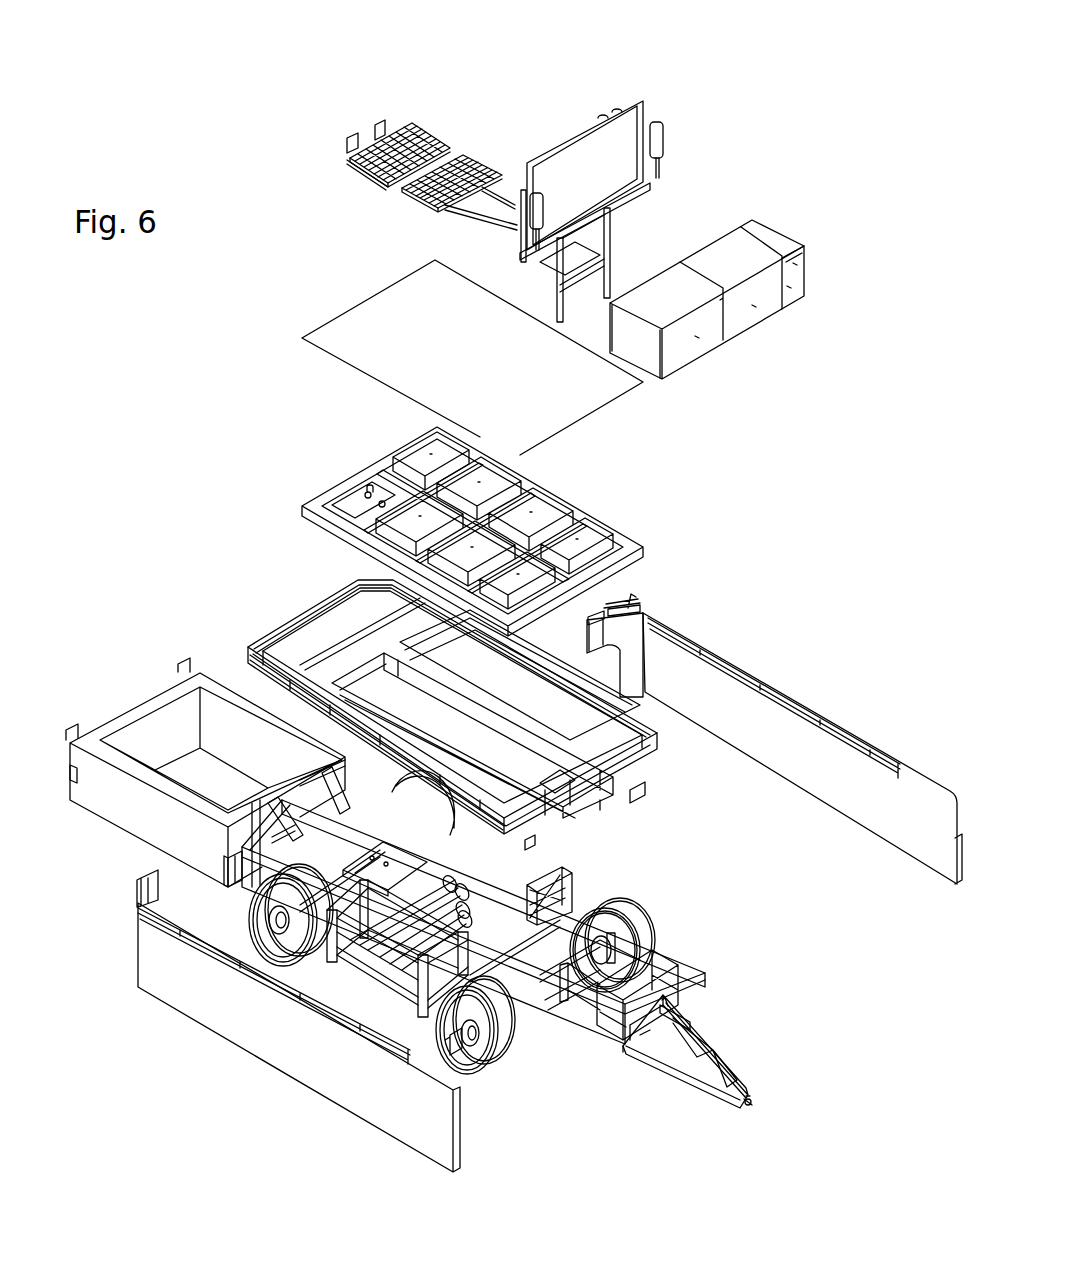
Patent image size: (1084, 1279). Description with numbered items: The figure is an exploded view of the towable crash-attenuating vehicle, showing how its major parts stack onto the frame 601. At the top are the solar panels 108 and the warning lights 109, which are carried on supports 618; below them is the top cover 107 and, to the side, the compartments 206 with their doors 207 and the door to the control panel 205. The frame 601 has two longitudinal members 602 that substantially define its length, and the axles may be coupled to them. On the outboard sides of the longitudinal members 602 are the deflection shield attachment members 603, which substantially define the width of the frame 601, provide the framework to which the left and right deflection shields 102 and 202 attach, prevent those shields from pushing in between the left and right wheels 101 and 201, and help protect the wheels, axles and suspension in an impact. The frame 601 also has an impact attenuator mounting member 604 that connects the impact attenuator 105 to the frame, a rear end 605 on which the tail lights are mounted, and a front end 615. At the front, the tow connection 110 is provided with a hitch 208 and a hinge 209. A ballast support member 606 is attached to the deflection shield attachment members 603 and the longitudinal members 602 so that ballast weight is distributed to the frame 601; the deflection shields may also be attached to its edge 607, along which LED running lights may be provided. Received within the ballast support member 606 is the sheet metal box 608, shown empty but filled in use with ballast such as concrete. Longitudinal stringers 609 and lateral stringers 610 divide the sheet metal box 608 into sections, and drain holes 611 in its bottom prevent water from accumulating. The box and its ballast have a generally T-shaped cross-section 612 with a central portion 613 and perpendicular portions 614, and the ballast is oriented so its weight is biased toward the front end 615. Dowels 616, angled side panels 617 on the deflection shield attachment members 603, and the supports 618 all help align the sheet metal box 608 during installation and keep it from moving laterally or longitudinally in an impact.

The left wheel 101 is at (452, 971).
The left deflection shield 102 is at (772, 701).
The impact attenuator 105 is at (137, 713).
The top cover 107 is at (397, 323).
The solar panels 108 is at (463, 183).
The warning lights 109 is at (625, 130).
The tow connection 110 is at (730, 1078).
The right wheel 201 is at (517, 1060).
The right deflection shield 202 is at (228, 997).
The control panel 205 is at (748, 323).
The compartments 206 is at (633, 340).
The doors 207 is at (755, 305).
The hitch 208 is at (755, 1103).
The hinge 209 is at (673, 1020).
The frame 601 is at (563, 1015).
The longitudinal members 602 is at (623, 988).
The deflection shield attachment members 603 is at (568, 887).
The impact attenuator mounting member 604 is at (275, 802).
The rear end 605 is at (263, 863).
The ballast support member 606 is at (440, 715).
The edge 607 is at (265, 683).
The sheet metal box 608 is at (452, 522).
The longitudinal stringers 609 is at (383, 480).
The lateral stringers 610 is at (523, 505).
The drain holes 611 is at (348, 520).
The T-shaped cross-section 612 is at (588, 588).
The central portion 613 is at (583, 605).
The perpendicular portions 614 is at (632, 563).
The front end 615 is at (643, 1023).
The dowels 616 is at (387, 862).
The angled side panels 617 is at (490, 882).
The supports 618 is at (635, 945).